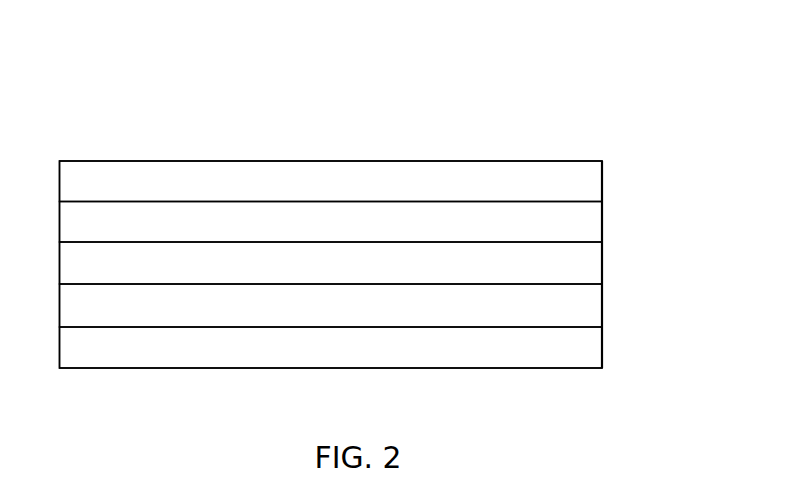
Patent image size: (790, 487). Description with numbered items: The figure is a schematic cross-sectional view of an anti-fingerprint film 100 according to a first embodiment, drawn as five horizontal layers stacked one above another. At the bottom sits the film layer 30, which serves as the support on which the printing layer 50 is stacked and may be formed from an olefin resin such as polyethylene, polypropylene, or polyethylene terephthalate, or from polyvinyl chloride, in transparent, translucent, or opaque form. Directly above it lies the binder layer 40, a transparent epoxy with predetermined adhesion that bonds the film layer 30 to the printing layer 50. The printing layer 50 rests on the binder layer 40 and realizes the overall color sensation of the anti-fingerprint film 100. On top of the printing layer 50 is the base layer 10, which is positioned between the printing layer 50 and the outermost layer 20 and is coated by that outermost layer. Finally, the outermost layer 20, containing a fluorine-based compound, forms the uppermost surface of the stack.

The anti-fingerprint film 100 is at (465, 38).
The outermost layer 20 is at (583, 176).
The base layer 10 is at (583, 230).
The printing layer 50 is at (583, 272).
The binder layer 40 is at (583, 312).
The film layer 30 is at (583, 355).